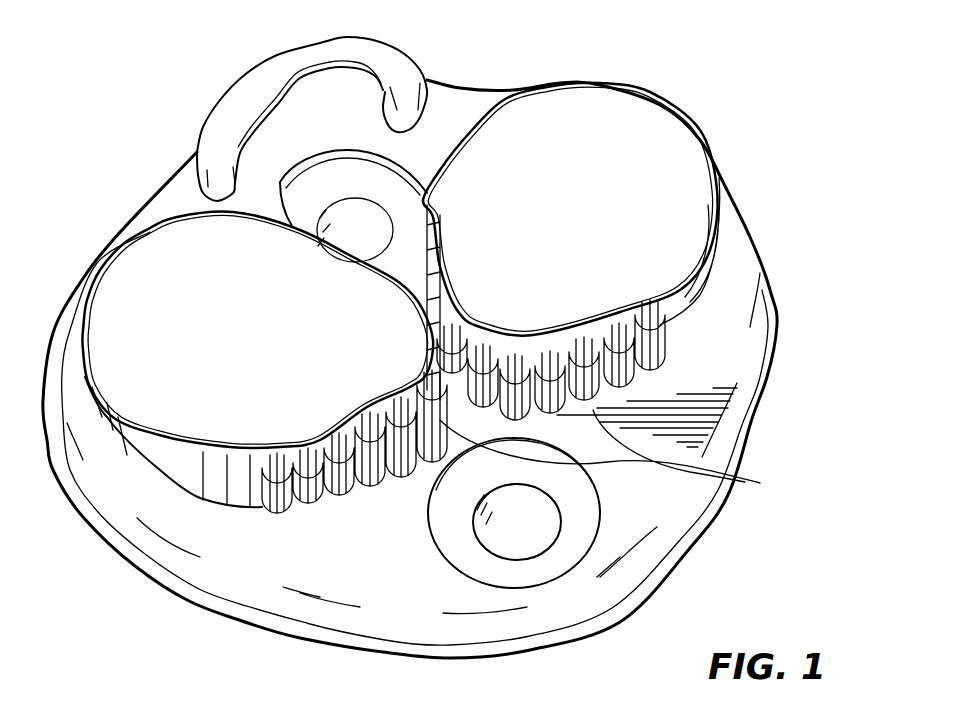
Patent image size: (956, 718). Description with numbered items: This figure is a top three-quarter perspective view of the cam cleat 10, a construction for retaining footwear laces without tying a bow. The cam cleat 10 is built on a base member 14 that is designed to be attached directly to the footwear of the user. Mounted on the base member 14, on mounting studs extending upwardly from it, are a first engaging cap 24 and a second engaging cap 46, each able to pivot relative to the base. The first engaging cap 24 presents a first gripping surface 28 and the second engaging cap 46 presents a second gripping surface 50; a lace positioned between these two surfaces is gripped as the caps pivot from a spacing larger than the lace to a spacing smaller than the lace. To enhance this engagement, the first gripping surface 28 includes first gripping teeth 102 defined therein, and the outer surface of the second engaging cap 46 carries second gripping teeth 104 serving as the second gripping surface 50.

The cam cleat 10 is at (703, 118).
The base member 14 is at (399, 579).
The first engaging cap 24 is at (252, 340).
The first gripping surface 28 is at (433, 268).
The second engaging cap 46 is at (588, 203).
The second gripping surface 50 is at (502, 330).
The first gripping teeth 102 is at (420, 467).
The second gripping teeth 104 is at (624, 441).